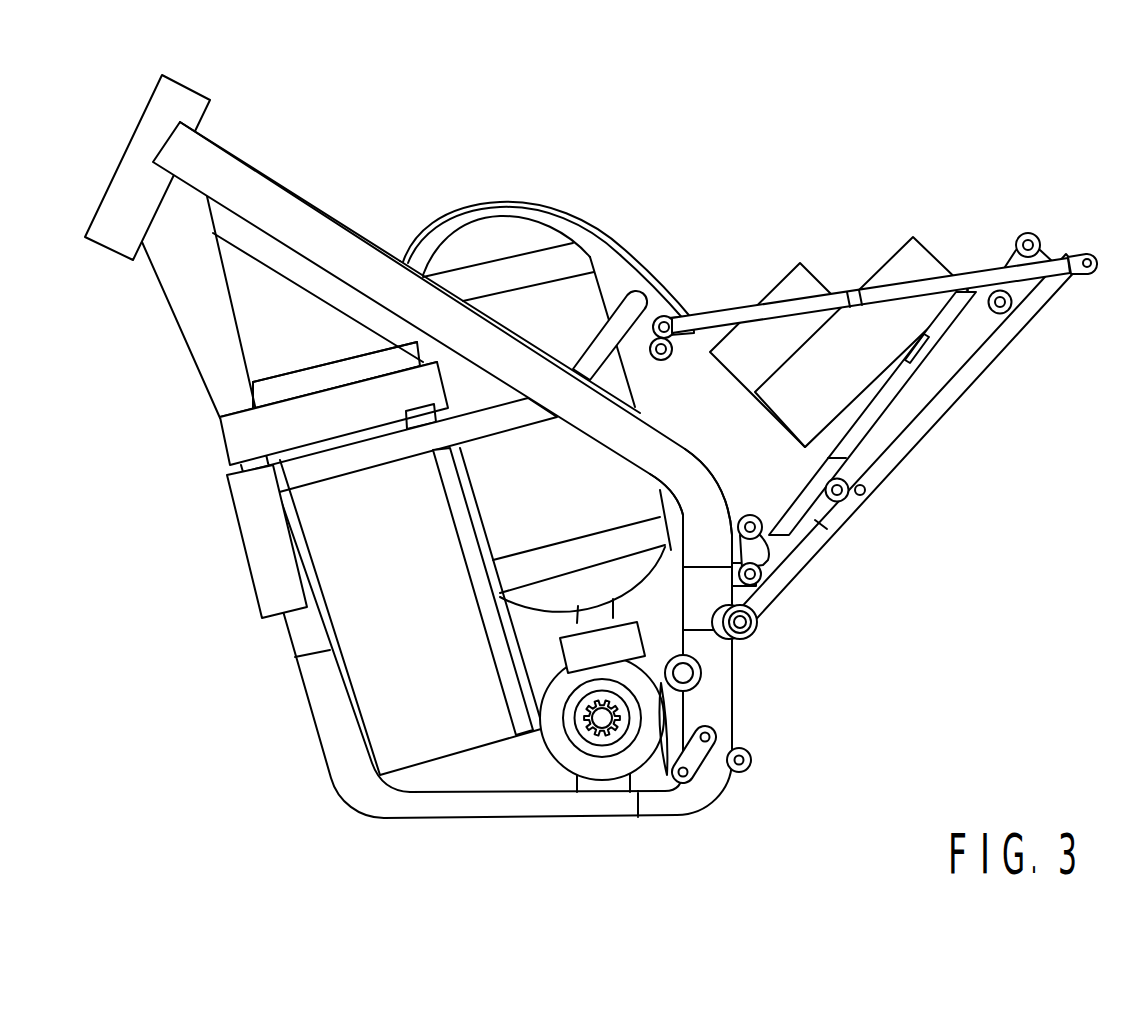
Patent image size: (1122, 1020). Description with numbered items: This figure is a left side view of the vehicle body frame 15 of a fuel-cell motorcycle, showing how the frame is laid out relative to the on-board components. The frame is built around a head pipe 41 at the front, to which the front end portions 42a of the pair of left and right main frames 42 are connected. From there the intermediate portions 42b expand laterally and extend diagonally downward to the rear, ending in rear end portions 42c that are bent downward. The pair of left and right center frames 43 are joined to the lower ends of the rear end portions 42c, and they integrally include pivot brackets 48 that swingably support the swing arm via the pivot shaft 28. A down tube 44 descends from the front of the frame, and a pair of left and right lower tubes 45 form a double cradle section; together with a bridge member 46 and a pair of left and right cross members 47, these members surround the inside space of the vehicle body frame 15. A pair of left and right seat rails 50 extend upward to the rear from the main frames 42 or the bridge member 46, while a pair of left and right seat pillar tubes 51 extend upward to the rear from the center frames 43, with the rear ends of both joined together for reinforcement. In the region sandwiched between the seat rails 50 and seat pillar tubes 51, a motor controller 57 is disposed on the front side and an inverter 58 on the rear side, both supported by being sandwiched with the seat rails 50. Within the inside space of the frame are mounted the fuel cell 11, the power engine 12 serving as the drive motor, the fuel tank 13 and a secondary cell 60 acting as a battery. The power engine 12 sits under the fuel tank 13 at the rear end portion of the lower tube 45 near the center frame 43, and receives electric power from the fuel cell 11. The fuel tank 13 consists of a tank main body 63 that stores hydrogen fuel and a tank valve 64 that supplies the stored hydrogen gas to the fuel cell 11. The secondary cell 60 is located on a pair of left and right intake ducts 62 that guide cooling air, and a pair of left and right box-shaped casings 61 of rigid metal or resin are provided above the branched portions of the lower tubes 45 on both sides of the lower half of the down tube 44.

The vehicle body frame 15 is at (327, 180).
The head pipe 41 is at (143, 112).
The main frames 42 is at (448, 360).
The front end portions 42a is at (225, 162).
The intermediate portions 42b is at (542, 368).
The rear end portions 42c is at (702, 477).
The center frames 43 is at (740, 688).
The down tube 44 is at (182, 338).
The lower tubes 45 is at (500, 817).
The bridge member 46 is at (637, 298).
The cross members 47 is at (388, 460).
The pivot brackets 48 is at (684, 682).
The pivot shaft 28 is at (700, 738).
The seat rails 50 is at (853, 299).
The seat pillar tubes 51 is at (990, 367).
The motor controller 57 is at (803, 262).
The inverter 58 is at (925, 262).
The secondary cell 60 is at (257, 349).
The casings 61 is at (250, 577).
The intake ducts 62 is at (226, 447).
The tank main body 63 is at (505, 543).
The tank valve 64 is at (578, 648).
The fuel tank 13 is at (522, 662).
The fuel cell 11 is at (451, 773).
The power engine 12 is at (551, 775).